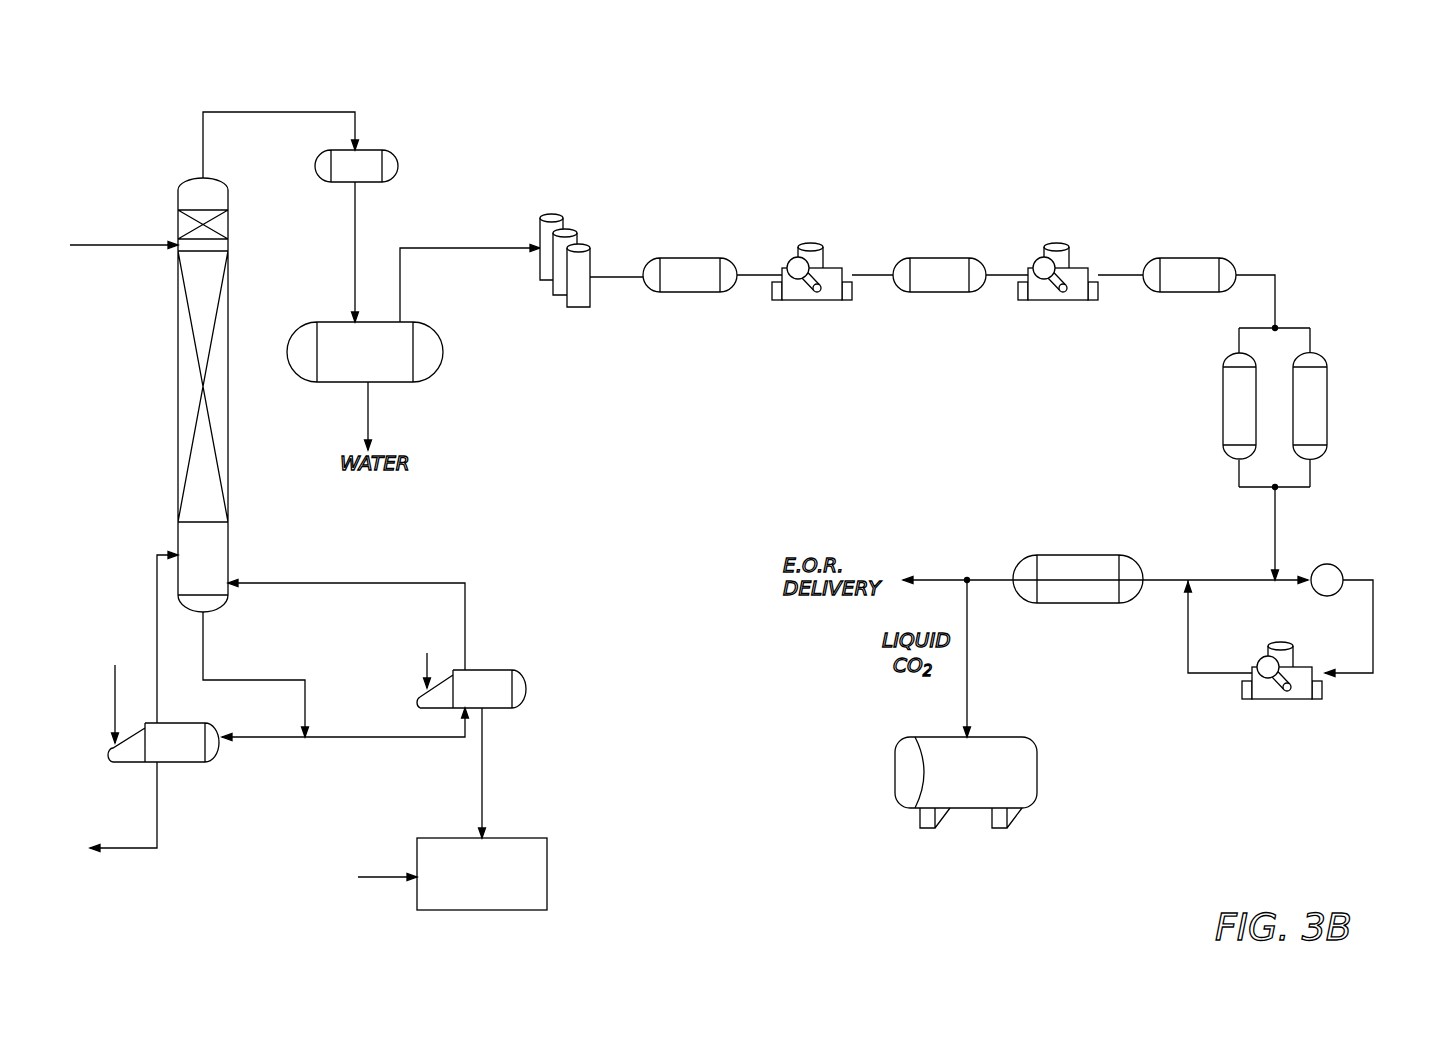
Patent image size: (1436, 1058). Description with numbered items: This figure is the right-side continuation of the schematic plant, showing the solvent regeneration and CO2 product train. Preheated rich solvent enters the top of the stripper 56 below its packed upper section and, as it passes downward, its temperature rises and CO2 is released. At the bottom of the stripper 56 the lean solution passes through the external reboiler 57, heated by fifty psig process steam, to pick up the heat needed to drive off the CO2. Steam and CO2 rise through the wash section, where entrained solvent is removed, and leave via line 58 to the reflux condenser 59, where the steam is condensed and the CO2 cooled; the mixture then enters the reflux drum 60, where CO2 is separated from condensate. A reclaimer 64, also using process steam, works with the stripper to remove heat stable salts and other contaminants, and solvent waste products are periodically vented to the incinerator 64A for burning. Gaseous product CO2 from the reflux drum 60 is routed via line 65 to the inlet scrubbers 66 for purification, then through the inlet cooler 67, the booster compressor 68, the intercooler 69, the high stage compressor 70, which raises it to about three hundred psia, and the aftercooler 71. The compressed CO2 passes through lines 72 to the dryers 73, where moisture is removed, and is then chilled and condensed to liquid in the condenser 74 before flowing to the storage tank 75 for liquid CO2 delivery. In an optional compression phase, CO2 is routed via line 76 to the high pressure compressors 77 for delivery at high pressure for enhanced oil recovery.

The stripper 56 is at (178, 440).
The external reboiler 57 is at (193, 763).
The line 58 is at (282, 112).
The reflux condenser 59 is at (378, 150).
The reflux drum 60 is at (433, 352).
The reclaimer 64 is at (528, 680).
The incinerator 64A is at (547, 882).
The line 65 is at (470, 250).
The inlet scrubbers 66 is at (565, 233).
The inlet cooler 67 is at (700, 296).
The booster compressor 68 is at (818, 302).
The intercooler 69 is at (945, 296).
The high stage compressor 70 is at (1068, 302).
The aftercooler 71 is at (1185, 296).
The lines 72 is at (1310, 340).
The dryers 73 is at (1327, 416).
The condenser 74 is at (1090, 605).
The storage tank 75 is at (1037, 780).
The line 76 is at (1373, 618).
The high pressure compressors 77 is at (1295, 702).